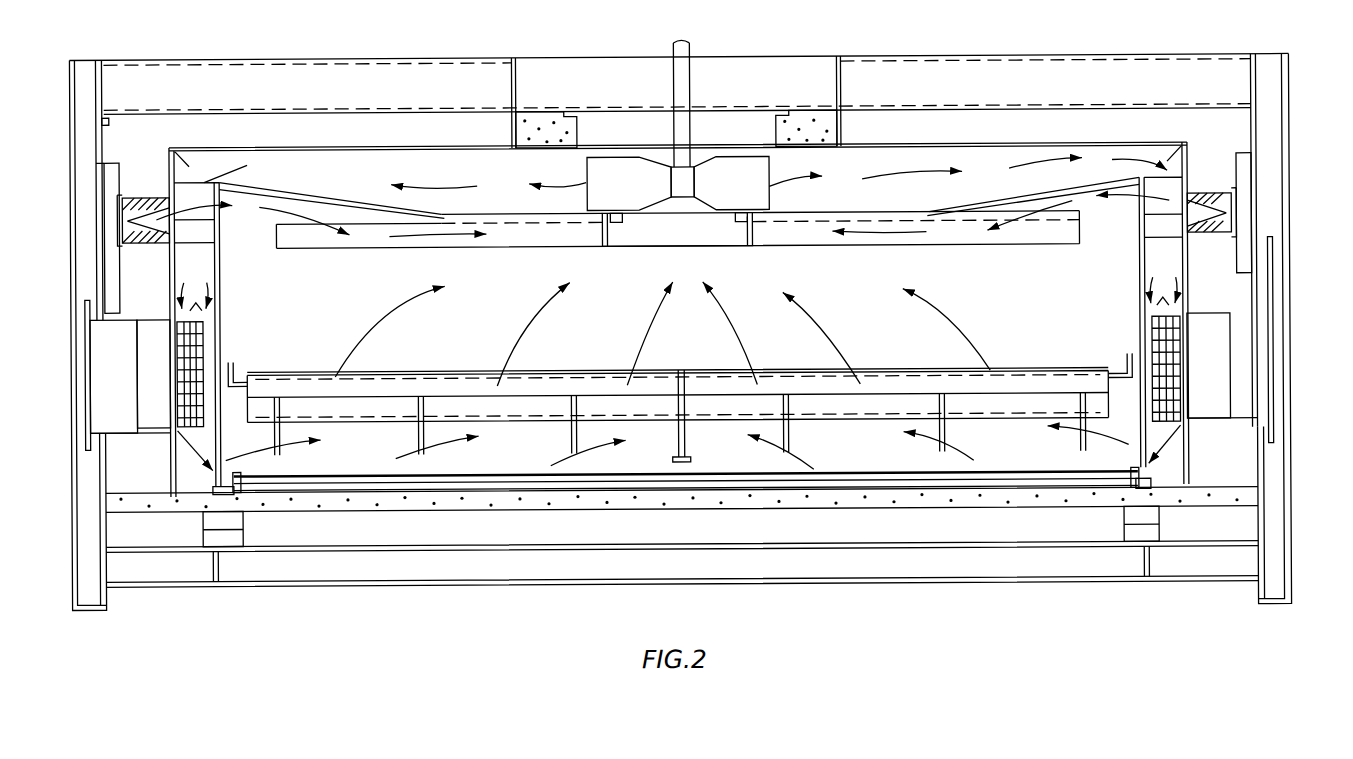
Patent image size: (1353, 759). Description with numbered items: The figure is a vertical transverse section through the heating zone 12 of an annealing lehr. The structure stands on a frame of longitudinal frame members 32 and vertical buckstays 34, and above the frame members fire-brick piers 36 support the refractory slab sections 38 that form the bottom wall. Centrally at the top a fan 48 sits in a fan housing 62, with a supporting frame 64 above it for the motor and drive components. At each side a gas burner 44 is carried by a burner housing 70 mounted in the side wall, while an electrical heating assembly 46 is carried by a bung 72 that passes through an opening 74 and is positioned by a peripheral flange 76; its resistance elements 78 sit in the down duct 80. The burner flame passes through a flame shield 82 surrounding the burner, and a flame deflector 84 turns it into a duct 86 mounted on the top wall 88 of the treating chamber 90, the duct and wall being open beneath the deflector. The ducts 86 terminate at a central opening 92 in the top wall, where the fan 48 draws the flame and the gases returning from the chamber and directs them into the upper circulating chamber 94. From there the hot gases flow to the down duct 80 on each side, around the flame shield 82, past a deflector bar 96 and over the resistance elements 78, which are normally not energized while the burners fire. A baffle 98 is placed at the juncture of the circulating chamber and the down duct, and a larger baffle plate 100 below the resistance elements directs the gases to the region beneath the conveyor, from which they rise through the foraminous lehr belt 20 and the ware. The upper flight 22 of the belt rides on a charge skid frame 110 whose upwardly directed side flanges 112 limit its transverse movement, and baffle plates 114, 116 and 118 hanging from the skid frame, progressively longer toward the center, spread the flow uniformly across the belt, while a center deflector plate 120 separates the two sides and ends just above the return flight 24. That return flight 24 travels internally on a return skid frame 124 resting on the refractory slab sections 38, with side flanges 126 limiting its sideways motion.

The heating zone 12 is at (1014, 50).
The lehr belt 20 is at (1018, 352).
The upper flight 22 is at (873, 370).
The return flight 24 is at (757, 472).
The longitudinal frame members 32 is at (412, 566).
The vertical buckstays 34 is at (88, 492).
The fire-brick piers 36 is at (236, 540).
The refractory slab sections 38 is at (723, 501).
The gas burner 44 is at (148, 193).
The electrical heating assembly 46 is at (1216, 366).
The fan 48 is at (770, 191).
The fan housing 62 is at (583, 128).
The supporting frame 64 is at (838, 72).
The burner housing 70 is at (111, 160).
The bung 72 is at (118, 326).
The opening 74 is at (110, 435).
The peripheral flange 76 is at (85, 330).
The resistance elements 78 is at (198, 373).
The down duct 80 is at (221, 265).
The flame shield 82 is at (200, 178).
The flame deflector 84 is at (268, 187).
The duct 86 is at (386, 250).
The top wall 88 is at (484, 214).
The treating chamber 90 is at (786, 340).
The central opening 92 is at (630, 250).
The upper circulating chamber 94 is at (526, 181).
The deflector bar 96 is at (200, 302).
The baffle 98 is at (176, 160).
The baffle plate 100 is at (200, 466).
The charge skid frame 110 is at (355, 405).
The side flanges 112 is at (236, 370).
The baffle plate 114 is at (275, 440).
The baffle plate 116 is at (418, 435).
The baffle plate 118 is at (569, 432).
The center deflector plate 120 is at (677, 440).
The return skid frame 124 is at (553, 491).
The side flanges 126 is at (242, 478).